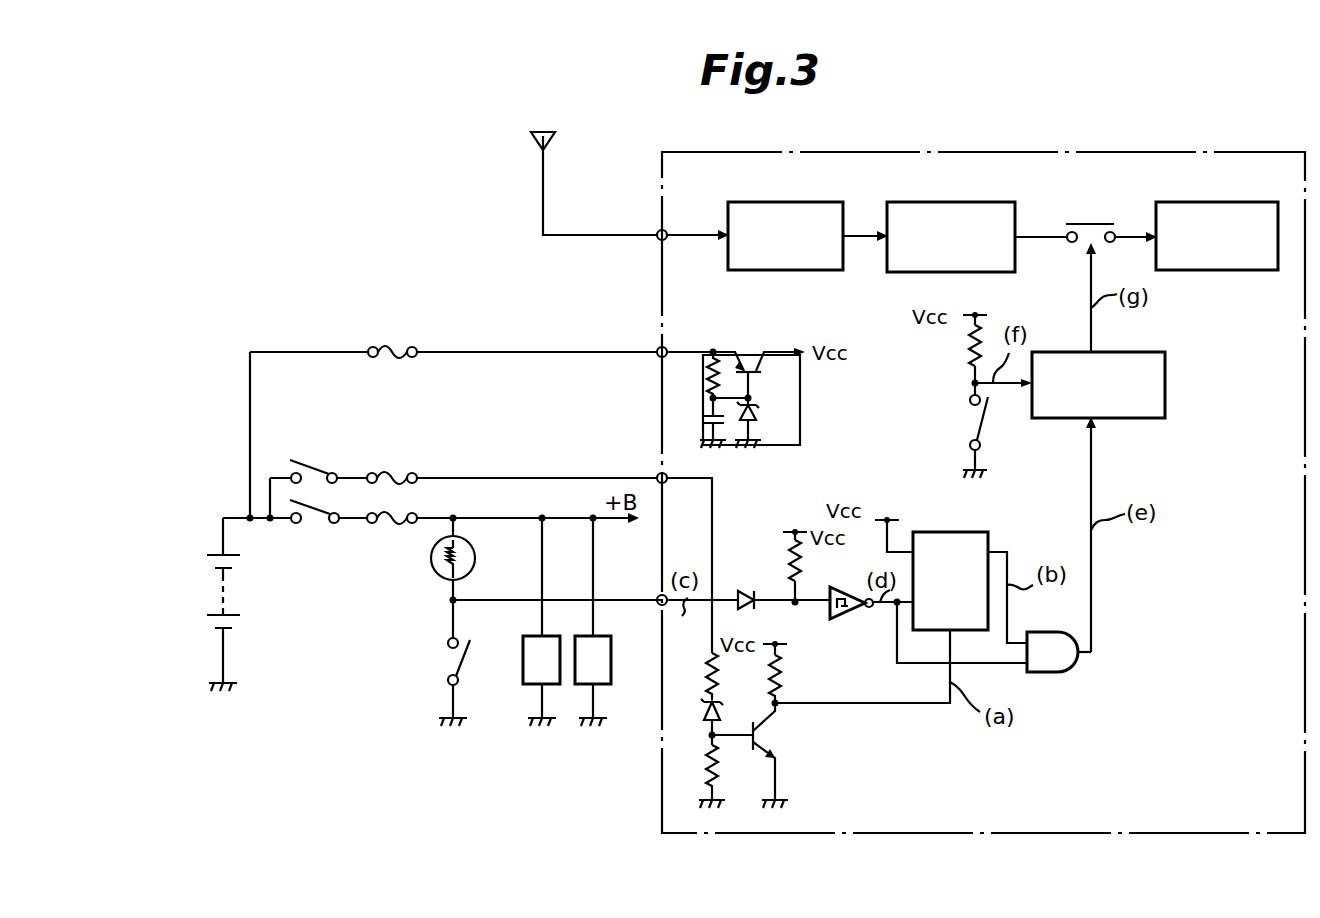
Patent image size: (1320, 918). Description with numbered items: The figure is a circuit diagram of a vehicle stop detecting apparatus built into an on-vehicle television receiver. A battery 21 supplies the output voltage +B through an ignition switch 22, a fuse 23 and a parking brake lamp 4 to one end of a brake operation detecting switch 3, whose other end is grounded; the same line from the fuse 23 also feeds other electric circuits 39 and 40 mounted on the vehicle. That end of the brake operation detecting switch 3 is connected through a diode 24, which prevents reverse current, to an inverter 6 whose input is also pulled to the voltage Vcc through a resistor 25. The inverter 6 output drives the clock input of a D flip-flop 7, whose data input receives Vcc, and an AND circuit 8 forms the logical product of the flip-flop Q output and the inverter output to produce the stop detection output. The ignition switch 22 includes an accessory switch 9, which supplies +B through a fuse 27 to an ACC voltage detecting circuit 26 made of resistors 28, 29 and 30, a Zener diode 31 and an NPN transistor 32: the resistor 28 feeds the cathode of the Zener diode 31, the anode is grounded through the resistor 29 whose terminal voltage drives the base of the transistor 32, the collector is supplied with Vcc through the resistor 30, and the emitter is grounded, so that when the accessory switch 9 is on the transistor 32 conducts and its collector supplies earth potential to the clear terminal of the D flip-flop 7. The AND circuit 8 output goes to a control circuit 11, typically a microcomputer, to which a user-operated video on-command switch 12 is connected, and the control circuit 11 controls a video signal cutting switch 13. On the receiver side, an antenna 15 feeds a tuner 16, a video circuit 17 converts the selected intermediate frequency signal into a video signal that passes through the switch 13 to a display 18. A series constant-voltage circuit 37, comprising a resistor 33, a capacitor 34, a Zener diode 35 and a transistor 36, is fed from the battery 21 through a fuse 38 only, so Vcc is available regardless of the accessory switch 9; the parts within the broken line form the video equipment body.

The brake operation detecting switch 3 is at (464, 658).
The parking brake lamp 4 is at (475, 556).
The inverter 6 is at (846, 619).
The D flip-flop 7 is at (968, 532).
The AND circuit 8 is at (1064, 672).
The accessory switch 9 is at (318, 470).
The control circuit 11 is at (1165, 356).
The video on-command switch 12 is at (987, 424).
The video signal cutting switch 13 is at (1093, 224).
The antenna 15 is at (553, 140).
The tuner 16 is at (818, 202).
The video circuit 17 is at (990, 202).
The display 18 is at (1262, 186).
The battery 21 is at (232, 596).
The ignition switch 22 is at (316, 524).
The fuse 23 is at (393, 524).
The diode 24 is at (748, 591).
The resistor 25 is at (800, 578).
The ACC voltage detecting circuit 26 is at (790, 762).
The fuse 27 is at (394, 470).
The resistor 28 is at (705, 675).
The resistor 29 is at (705, 768).
The resistor 30 is at (781, 680).
The Zener diode 31 is at (702, 712).
The NPN transistor 32 is at (772, 736).
The resistor 33 is at (707, 380).
The capacitor 34 is at (702, 420).
The Zener diode 35 is at (758, 412).
The transistor 36 is at (752, 352).
The series constant-voltage circuit 37 is at (768, 430).
The fuse 38 is at (392, 345).
The electric circuit 39 is at (566, 626).
The electric circuit 40 is at (611, 652).